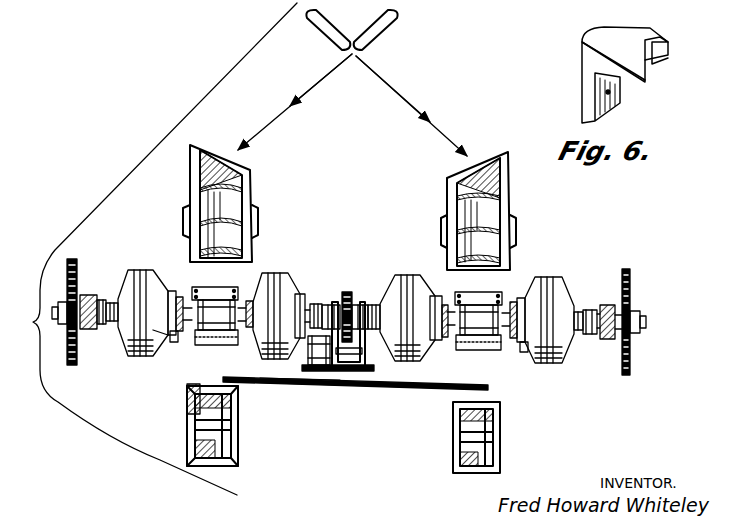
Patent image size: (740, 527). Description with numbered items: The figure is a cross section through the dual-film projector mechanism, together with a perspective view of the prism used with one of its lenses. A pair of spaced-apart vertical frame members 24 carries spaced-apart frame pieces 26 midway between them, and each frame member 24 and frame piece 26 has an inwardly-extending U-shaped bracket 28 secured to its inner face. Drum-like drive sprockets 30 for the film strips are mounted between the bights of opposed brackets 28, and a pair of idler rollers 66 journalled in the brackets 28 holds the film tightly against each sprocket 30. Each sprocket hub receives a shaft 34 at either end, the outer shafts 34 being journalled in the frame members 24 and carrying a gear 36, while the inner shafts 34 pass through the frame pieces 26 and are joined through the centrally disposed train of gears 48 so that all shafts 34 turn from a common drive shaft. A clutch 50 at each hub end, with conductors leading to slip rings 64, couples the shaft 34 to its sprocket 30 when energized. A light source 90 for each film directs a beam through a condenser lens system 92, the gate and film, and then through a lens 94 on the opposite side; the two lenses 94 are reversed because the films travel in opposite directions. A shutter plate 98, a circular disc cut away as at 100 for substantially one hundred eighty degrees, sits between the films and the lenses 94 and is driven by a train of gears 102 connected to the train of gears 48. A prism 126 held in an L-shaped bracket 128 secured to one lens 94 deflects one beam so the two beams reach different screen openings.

In FIG. 2, the vertical frame member 24 is at (90, 294).
In FIG. 2, the frame piece 26 is at (346, 292).
In FIG. 2, the U-shaped bracket 28 is at (177, 333).
In FIG. 2, the drive sprocket 30 is at (206, 290).
In FIG. 2, the shaft 34 is at (104, 300).
In FIG. 2, the gear 36 is at (70, 362).
In FIG. 2, the train of gears 48 is at (361, 340).
In FIG. 2, the clutch 50 is at (140, 356).
In FIG. 2, the slip ring 64 is at (112, 323).
In FIG. 2, the idler roller 66 is at (216, 310).
In FIG. 2, the light source 90 is at (332, 34).
In FIG. 2, the condenser lens system 92 is at (253, 195).
In FIG. 2, the lens 94 is at (239, 446).
In FIG. 2, the shutter plate 98 is at (324, 384).
In FIG. 2, the cut-away portion 100 is at (290, 383).
In FIG. 2, the train of gears 102 is at (303, 368).
In FIG. 2, the prism 126 is at (212, 345).
In FIG. 6, the prism 126 is at (655, 62).
In FIG. 2, the L-shaped bracket 128 is at (188, 392).
In FIG. 6, the L-shaped bracket 128 is at (583, 92).